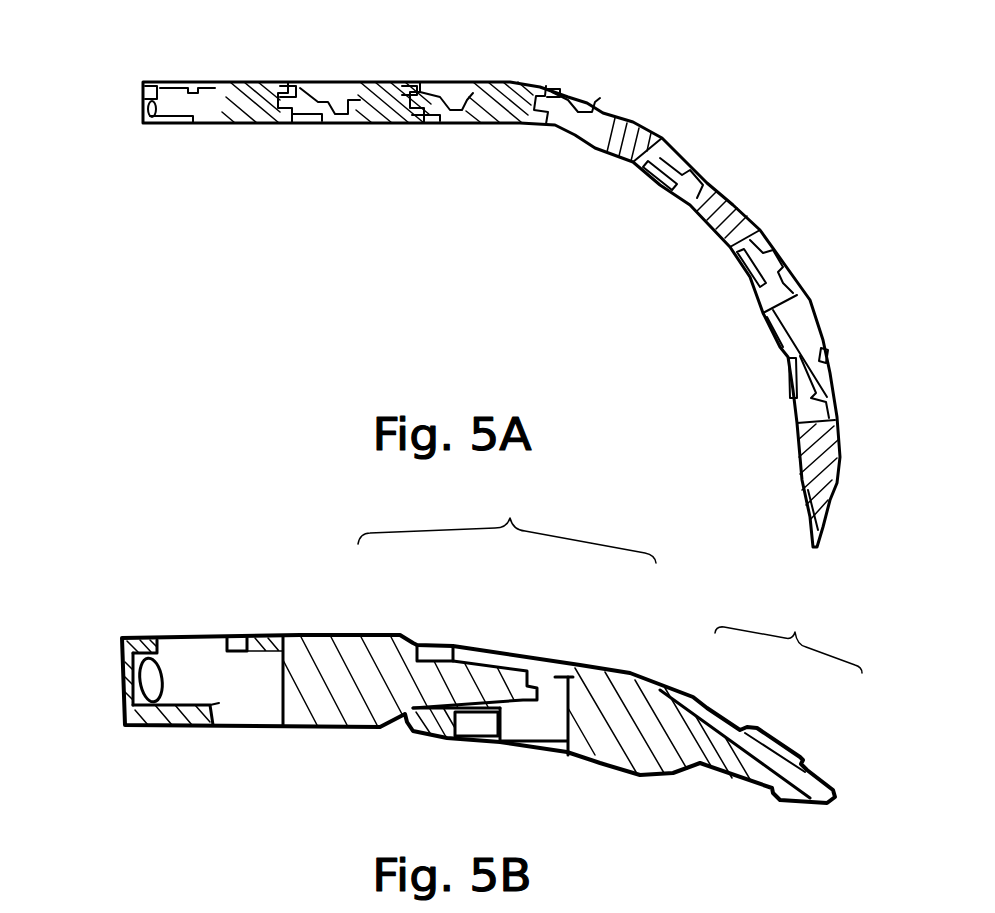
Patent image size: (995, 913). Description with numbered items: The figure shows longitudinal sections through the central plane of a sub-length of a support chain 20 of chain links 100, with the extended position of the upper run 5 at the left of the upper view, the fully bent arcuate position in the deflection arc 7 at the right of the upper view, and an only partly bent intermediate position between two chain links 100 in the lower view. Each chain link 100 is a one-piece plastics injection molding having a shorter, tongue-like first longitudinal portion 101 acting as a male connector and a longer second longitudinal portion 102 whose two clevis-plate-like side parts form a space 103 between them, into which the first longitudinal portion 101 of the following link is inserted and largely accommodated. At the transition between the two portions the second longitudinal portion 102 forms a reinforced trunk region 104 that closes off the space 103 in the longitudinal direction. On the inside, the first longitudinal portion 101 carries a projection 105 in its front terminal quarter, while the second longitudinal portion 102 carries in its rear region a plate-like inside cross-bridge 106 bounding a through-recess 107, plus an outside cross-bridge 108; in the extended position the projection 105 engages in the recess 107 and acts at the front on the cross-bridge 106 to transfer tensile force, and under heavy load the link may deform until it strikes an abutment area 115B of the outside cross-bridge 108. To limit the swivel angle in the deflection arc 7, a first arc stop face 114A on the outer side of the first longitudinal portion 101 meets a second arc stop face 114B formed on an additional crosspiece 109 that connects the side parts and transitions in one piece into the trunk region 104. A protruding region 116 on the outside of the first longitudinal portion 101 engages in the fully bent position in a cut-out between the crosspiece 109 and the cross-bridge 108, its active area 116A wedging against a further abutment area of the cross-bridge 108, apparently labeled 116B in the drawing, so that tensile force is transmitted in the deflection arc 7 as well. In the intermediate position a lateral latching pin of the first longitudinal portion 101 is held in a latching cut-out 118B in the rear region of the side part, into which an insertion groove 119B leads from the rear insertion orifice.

In FIG. 5A, the upper run 5 is at (318, 245).
In FIG. 5A, the deflection arc 7 is at (677, 293).
In FIG. 5A, the support chain 20 is at (705, 115).
In FIG. 5A, the chain link 100 is at (242, 70).
In FIG. 5B, the chain link 100 is at (300, 622).
In FIG. 5A, the first longitudinal portion 101 is at (290, 103).
In FIG. 5B, the first longitudinal portion 101 is at (788, 640).
In FIG. 5A, the second longitudinal portion 102 is at (337, 100).
In FIG. 5B, the second longitudinal portion 102 is at (507, 622).
In FIG. 5B, the space 103 is at (198, 694).
In FIG. 5B, the trunk region 104 is at (600, 680).
In FIG. 5A, the projection 105 is at (330, 125).
In FIG. 5B, the projection 105 is at (517, 710).
In FIG. 5A, the cross-bridge 106 is at (175, 125).
In FIG. 5B, the cross-bridge 106 is at (197, 718).
In FIG. 5A, the recess 107 is at (208, 108).
In FIG. 5B, the recess 107 is at (248, 717).
In FIG. 5B, the outside cross-bridge 108 is at (140, 640).
In FIG. 5B, the crosspiece 109 is at (243, 638).
In FIG. 5B, the first arc stop face 114A is at (537, 687).
In FIG. 5B, the second arc stop face 114B is at (565, 698).
In FIG. 5B, the abutment area 115B is at (112, 645).
In FIG. 5B, the protruding region 116 is at (783, 750).
In FIG. 5B, the further active area 116A is at (470, 648).
In FIG. 5B, the second recess 116B is at (172, 642).
In FIG. 5B, the latching cut-out 118B is at (157, 700).
In FIG. 5B, the insertion groove 119B is at (137, 684).